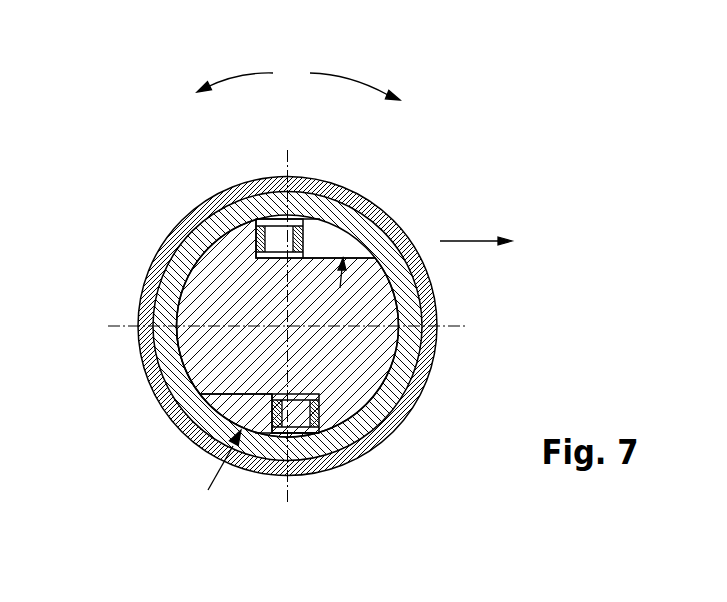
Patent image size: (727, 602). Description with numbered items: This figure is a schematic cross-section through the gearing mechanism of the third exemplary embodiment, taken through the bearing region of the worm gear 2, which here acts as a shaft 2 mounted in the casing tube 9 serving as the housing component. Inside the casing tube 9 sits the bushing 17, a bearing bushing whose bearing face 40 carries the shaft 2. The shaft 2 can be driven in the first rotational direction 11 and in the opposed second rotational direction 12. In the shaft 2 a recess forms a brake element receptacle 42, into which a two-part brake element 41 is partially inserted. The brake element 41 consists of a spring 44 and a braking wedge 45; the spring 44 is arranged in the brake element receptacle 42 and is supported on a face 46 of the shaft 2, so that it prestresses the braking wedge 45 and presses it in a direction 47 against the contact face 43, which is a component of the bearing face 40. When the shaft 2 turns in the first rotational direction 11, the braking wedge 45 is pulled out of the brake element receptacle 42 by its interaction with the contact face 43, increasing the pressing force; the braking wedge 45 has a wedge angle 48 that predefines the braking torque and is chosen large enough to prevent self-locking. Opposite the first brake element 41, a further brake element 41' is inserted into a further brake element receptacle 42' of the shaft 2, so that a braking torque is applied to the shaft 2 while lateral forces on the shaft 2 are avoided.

The worm gear 2 is at (210, 315).
The casing tube 9 is at (346, 456).
The first rotational direction 11 is at (357, 80).
The second rotational direction 12 is at (243, 75).
The bushing 17 is at (410, 307).
The bearing face 40 is at (192, 374).
The brake element 41 is at (287, 305).
The further brake element 41' is at (213, 477).
The brake element receptacle 42 is at (199, 246).
The further brake element receptacle 42' is at (378, 408).
The contact face 43 is at (188, 360).
The spring 44 is at (287, 326).
The braking wedge 45 is at (323, 235).
The face of the shaft 46 is at (212, 222).
The direction 47 is at (463, 238).
The wedge angle 48 is at (343, 259).